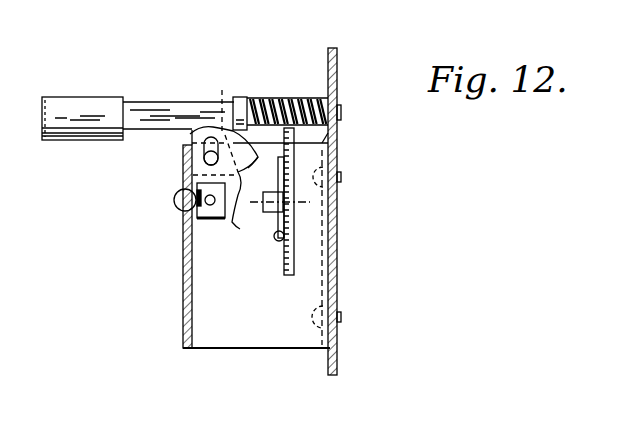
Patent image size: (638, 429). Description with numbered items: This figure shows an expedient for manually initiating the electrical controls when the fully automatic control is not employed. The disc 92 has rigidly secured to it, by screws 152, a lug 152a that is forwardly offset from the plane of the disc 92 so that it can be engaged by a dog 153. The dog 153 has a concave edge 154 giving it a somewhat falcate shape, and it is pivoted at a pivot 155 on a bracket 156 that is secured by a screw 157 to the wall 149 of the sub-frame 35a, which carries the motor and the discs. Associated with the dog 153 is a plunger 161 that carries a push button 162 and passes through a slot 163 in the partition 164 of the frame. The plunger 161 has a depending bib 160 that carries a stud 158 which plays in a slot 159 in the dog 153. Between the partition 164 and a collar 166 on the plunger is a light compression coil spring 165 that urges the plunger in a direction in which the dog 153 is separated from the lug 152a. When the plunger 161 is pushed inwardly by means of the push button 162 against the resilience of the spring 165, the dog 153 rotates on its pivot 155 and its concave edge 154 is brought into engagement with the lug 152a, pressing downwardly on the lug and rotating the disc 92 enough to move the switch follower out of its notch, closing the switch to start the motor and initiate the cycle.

The push button 162 is at (67, 102).
The plunger 161 is at (147, 103).
The bib 160 is at (215, 125).
The collar 166 is at (238, 97).
The compression coil spring 165 is at (297, 102).
The slot 163 is at (337, 105).
The partition 164 is at (330, 136).
The slot 159 is at (203, 142).
The stud 158 is at (205, 158).
The screw 157 is at (176, 198).
The pivot 155 is at (197, 214).
The bracket 156 is at (208, 203).
The dog 153 is at (267, 213).
The concave edge 154 is at (240, 172).
The screws 152 is at (280, 229).
The lug 152a is at (273, 233).
The disc 92 is at (286, 275).
The wall 149 is at (183, 334).
The sub-frame 35a is at (247, 337).